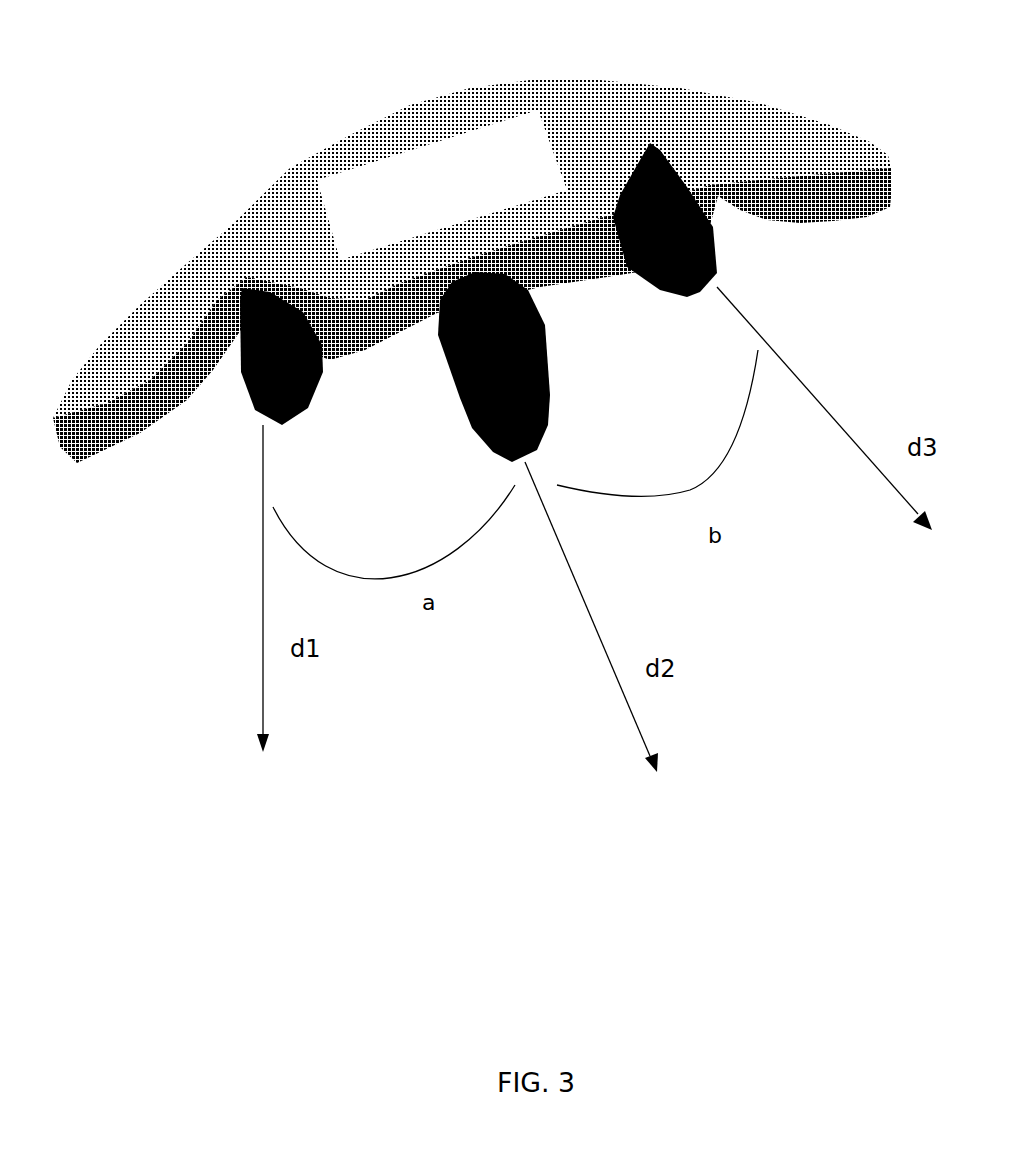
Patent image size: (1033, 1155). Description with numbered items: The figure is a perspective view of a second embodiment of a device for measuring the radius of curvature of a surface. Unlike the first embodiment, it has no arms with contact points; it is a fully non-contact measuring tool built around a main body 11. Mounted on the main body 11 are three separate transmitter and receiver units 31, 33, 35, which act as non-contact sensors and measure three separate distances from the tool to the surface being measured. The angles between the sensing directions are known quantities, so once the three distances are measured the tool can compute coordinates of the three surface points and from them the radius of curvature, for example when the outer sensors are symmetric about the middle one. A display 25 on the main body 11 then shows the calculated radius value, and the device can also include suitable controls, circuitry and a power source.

The main body 11 is at (582, 107).
The display 25 is at (384, 170).
The transmitter and receiver unit 31 is at (318, 393).
The transmitter and receiver unit 33 is at (537, 350).
The transmitter and receiver unit 35 is at (720, 260).